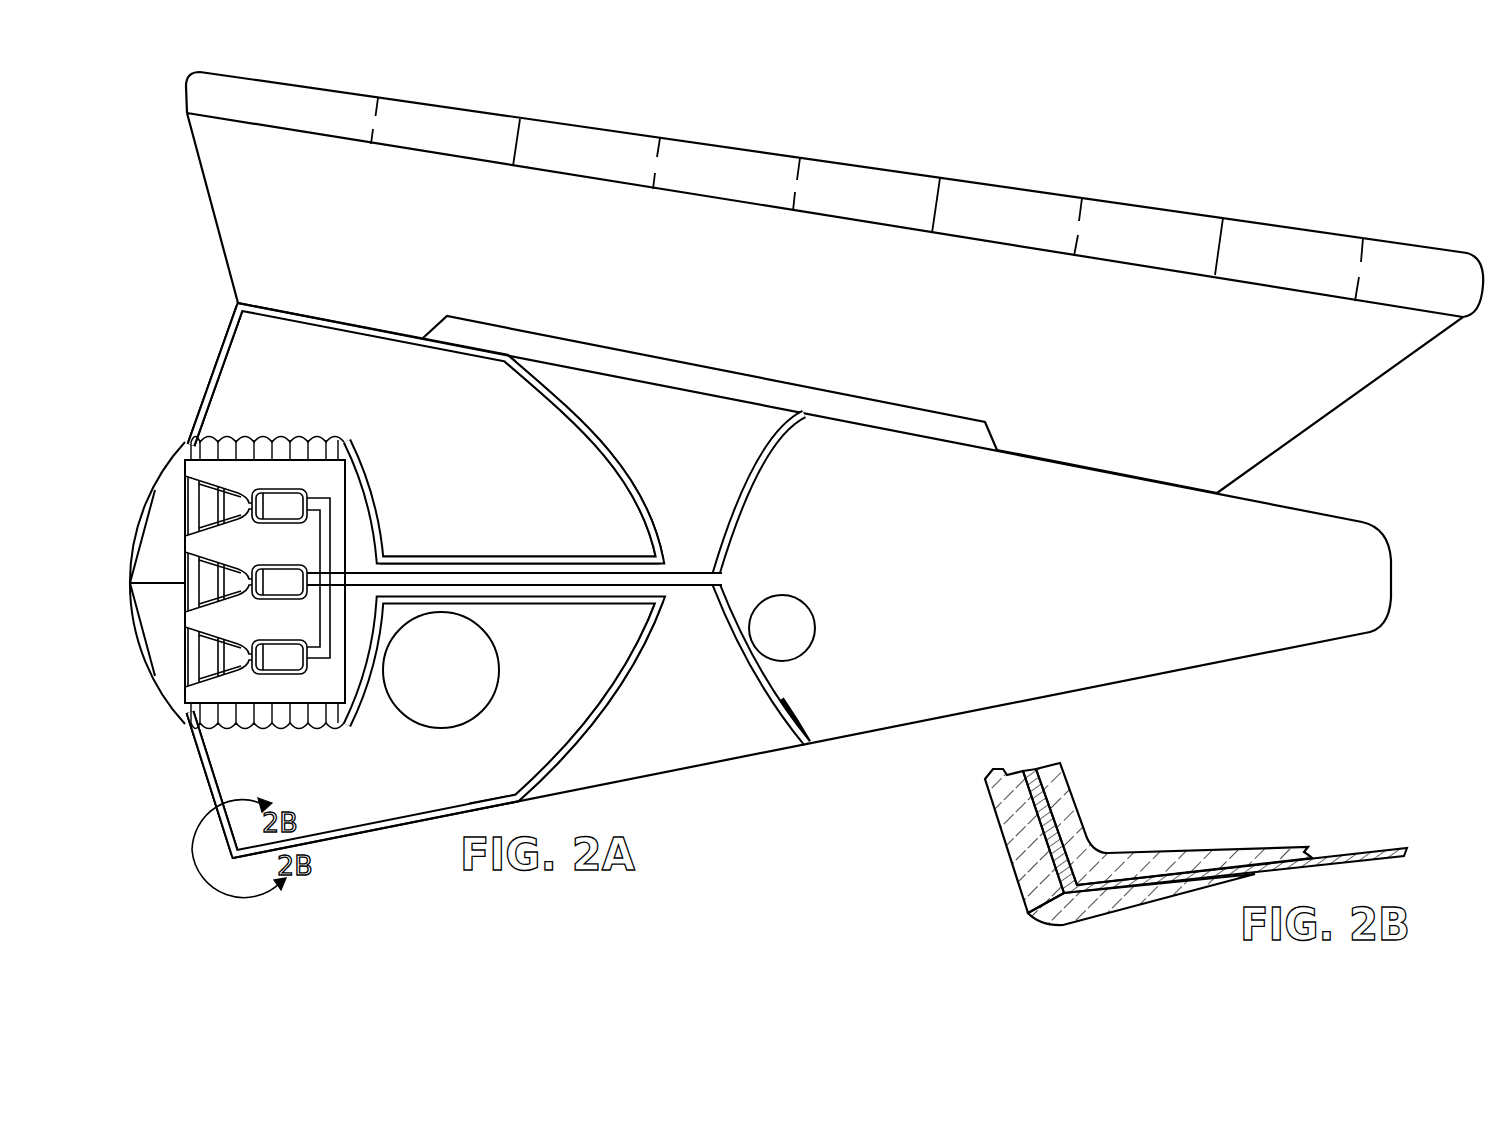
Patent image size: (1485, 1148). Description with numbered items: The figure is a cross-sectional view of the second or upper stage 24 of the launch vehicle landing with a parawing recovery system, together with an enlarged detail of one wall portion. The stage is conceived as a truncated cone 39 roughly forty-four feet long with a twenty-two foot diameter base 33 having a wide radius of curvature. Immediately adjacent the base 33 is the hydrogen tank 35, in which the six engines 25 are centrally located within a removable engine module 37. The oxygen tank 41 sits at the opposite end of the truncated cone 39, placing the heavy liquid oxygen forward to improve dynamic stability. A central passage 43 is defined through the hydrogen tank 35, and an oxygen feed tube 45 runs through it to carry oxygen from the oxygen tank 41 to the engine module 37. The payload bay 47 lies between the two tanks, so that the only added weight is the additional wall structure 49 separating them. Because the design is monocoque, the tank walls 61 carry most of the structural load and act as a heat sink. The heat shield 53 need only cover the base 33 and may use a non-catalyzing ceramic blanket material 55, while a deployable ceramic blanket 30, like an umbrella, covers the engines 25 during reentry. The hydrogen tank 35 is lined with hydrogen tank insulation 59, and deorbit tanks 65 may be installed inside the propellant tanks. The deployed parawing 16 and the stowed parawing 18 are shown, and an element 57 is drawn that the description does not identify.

In FIG. 2A, the deployed parawing 16 is at (1036, 191).
In FIG. 2A, the stowed parawing 18 is at (620, 350).
In FIG. 2A, the second or upper stage 24 is at (1184, 677).
In FIG. 2A, the RL-10 engines 25 is at (294, 524).
In FIG. 2A, the deployable ceramic blanket 30 is at (144, 652).
In FIG. 2A, the base 33 is at (207, 408).
In FIG. 2A, the hydrogen tank 35 is at (450, 353).
In FIG. 2A, the engine module 37 is at (333, 481).
In FIG. 2A, the truncated cone 39 is at (332, 320).
In FIG. 2A, the oxygen tank 41 is at (1043, 460).
In FIG. 2A, the central passage 43 is at (517, 558).
In FIG. 2A, the oxygen feed tube 45 is at (423, 572).
In FIG. 2A, the payload bay 47 is at (594, 737).
In FIG. 2A, the additional wall structure 49 is at (722, 763).
In FIG. 2B, the additional wall structure 49 is at (1021, 770).
In FIG. 2A, the heat shield 53 is at (216, 355).
In FIG. 2B, the heat shield 53 is at (1000, 820).
In FIG. 2A, the non-catalyzing ceramic blanket material 55 is at (193, 752).
In FIG. 2B, the non-catalyzing ceramic blanket material 55 is at (1013, 870).
In FIG. 2A, the feed lines 57 is at (267, 650).
In FIG. 2A, the hydrogen tank insulation 59 is at (318, 437).
In FIG. 2B, the hydrogen tank insulation 59 is at (1085, 836).
In FIG. 2A, the tank walls 61 is at (490, 797).
In FIG. 2A, the deorbit tanks 65 is at (488, 637).